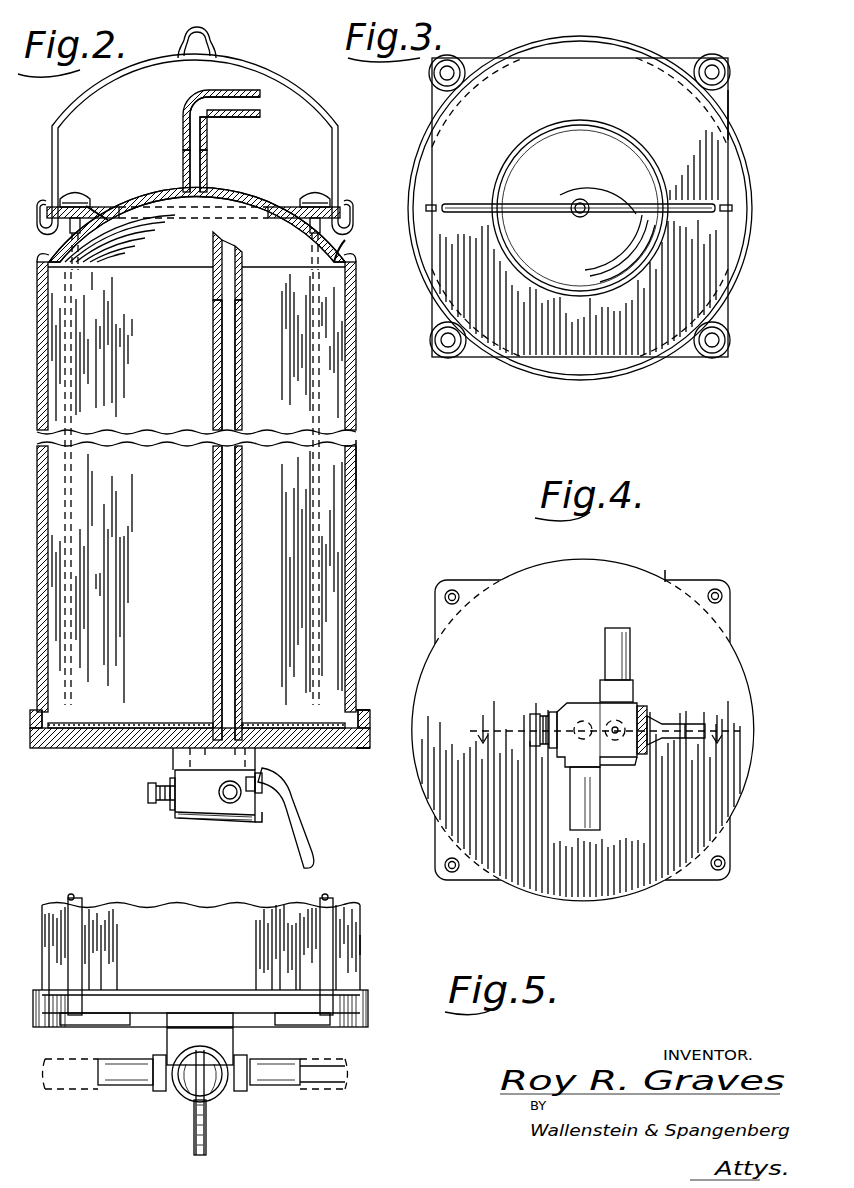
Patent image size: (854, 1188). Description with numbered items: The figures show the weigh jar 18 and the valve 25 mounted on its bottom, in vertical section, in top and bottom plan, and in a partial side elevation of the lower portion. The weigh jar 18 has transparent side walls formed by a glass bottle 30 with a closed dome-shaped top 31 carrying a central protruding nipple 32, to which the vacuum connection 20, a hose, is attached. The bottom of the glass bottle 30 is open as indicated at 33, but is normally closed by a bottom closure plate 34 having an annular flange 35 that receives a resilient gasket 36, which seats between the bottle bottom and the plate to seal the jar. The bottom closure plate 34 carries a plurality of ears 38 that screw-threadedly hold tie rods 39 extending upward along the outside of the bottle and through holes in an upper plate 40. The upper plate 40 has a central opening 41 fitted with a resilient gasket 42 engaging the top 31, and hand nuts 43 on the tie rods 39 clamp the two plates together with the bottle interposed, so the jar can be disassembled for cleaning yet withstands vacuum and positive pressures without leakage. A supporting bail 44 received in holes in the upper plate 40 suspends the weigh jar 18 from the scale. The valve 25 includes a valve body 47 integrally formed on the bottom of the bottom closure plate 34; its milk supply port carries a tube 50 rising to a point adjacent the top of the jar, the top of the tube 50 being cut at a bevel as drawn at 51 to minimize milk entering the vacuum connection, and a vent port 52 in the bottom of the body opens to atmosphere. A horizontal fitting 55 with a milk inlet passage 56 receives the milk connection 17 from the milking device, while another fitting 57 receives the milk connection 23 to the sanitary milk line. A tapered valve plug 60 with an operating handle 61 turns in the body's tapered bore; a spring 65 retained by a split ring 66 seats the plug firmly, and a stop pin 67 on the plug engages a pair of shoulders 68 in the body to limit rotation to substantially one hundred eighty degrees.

In FIG. 5, the milk connection 17 is at (75, 1090).
In FIG. 2, the weigh jar 18 is at (374, 465).
In FIG. 3, the weigh jar 18 is at (745, 94).
In FIG. 4, the weigh jar 18 is at (684, 570).
In FIG. 5, the weigh jar 18 is at (382, 949).
In FIG. 2, the vacuum connection 20 is at (250, 108).
In FIG. 5, the milk connection 23 is at (335, 1090).
In FIG. 2, the valve 25 is at (196, 834).
In FIG. 4, the valve 25 is at (550, 698).
In FIG. 5, the valve 25 is at (180, 1118).
In FIG. 2, the glass bottle 30 is at (357, 494).
In FIG. 3, the glass bottle 30 is at (416, 258).
In FIG. 5, the glass bottle 30 is at (360, 973).
In FIG. 2, the dome-shaped top 31 is at (244, 198).
In FIG. 3, the dome-shaped top 31 is at (616, 278).
In FIG. 2, the nipple 32 is at (207, 180).
In FIG. 3, the nipple 32 is at (583, 200).
In FIG. 2, the open bottom 33 is at (118, 724).
In FIG. 2, the bottom closure plate 34 is at (115, 750).
In FIG. 4, the bottom closure plate 34 is at (710, 665).
In FIG. 5, the bottom closure plate 34 is at (250, 1024).
In FIG. 2, the annular flange 35 is at (368, 710).
In FIG. 5, the annular flange 35 is at (368, 1008).
In FIG. 2, the resilient gasket 36 is at (358, 750).
In FIG. 4, the ears 38 is at (438, 617).
In FIG. 5, the ears 38 is at (95, 1025).
In FIG. 2, the tie rods 39 is at (75, 603).
In FIG. 4, the tie rods 39 is at (444, 597).
In FIG. 5, the tie rods 39 is at (68, 903).
In FIG. 2, the upper plate 40 is at (340, 226).
In FIG. 3, the upper plate 40 is at (532, 362).
In FIG. 2, the central opening 41 is at (90, 207).
In FIG. 3, the central opening 41 is at (520, 265).
In FIG. 2, the resilient gasket 42 is at (105, 212).
In FIG. 2, the hand nuts 43 is at (78, 192).
In FIG. 3, the hand nuts 43 is at (430, 74).
In FIG. 2, the supporting bail 44 is at (300, 88).
In FIG. 3, the supporting bail 44 is at (528, 215).
In FIG. 2, the valve body 47 is at (250, 762).
In FIG. 4, the valve body 47 is at (630, 766).
In FIG. 5, the valve body 47 is at (182, 1042).
In FIG. 2, the tube 50 is at (244, 545).
In FIG. 2, the tube top 51 is at (236, 244).
In FIG. 4, the vent port 52 is at (615, 740).
In FIG. 2, the fitting 55 is at (240, 810).
In FIG. 4, the fitting 55 is at (628, 655).
In FIG. 5, the fitting 55 is at (172, 1072).
In FIG. 2, the milk inlet passage 56 is at (228, 802).
In FIG. 4, the fitting 57 is at (570, 795).
In FIG. 5, the fitting 57 is at (283, 1086).
In FIG. 2, the valve plug 60 is at (262, 778).
In FIG. 4, the valve plug 60 is at (648, 752).
In FIG. 5, the valve plug 60 is at (221, 1100).
In FIG. 2, the operating handle 61 is at (292, 812).
In FIG. 4, the operating handle 61 is at (690, 738).
In FIG. 5, the operating handle 61 is at (208, 1142).
In FIG. 2, the spring 65 is at (168, 810).
In FIG. 4, the spring 65 is at (556, 712).
In FIG. 2, the split ring 66 is at (150, 794).
In FIG. 4, the split ring 66 is at (540, 746).
In FIG. 2, the stop pin 67 is at (262, 822).
In FIG. 2, the shoulders 68 is at (262, 792).
In FIG. 5, the shoulders 68 is at (125, 1086).